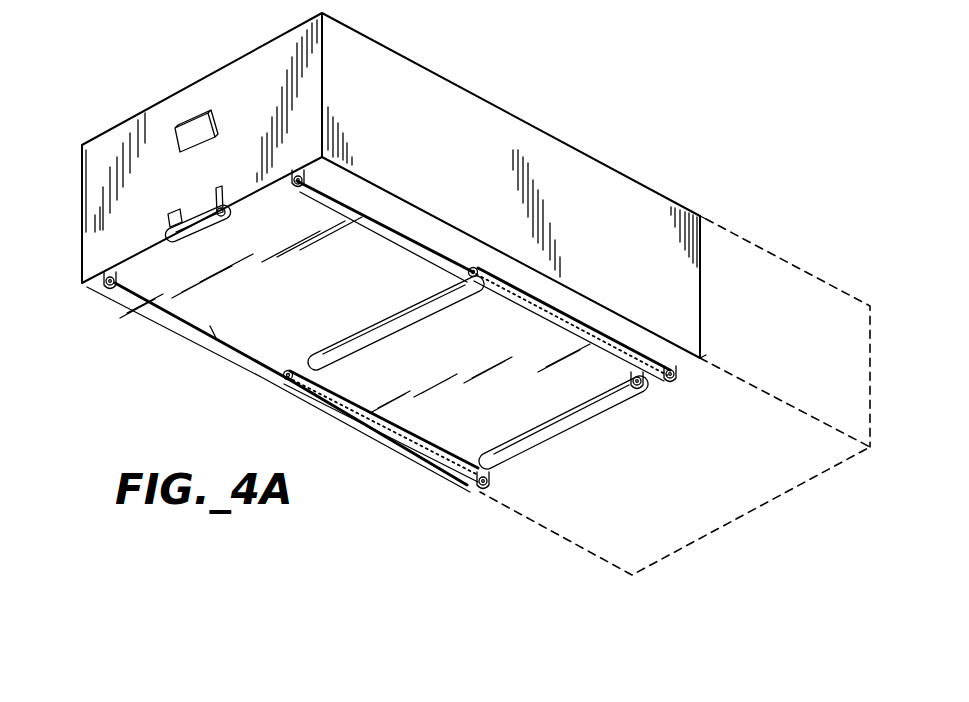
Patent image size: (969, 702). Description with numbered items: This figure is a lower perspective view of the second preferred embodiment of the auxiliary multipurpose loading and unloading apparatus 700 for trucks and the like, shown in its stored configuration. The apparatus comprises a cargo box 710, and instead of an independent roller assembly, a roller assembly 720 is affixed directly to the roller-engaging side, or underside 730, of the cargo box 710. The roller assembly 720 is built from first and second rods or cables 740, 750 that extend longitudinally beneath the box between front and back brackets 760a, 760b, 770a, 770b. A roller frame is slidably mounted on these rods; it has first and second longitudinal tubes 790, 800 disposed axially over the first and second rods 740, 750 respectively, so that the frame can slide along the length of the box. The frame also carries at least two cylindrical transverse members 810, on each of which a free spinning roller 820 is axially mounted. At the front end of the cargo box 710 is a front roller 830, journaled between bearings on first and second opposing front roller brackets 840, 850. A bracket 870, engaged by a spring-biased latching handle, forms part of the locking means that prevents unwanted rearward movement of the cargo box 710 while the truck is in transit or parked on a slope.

The auxiliary multipurpose loading and unloading apparatus 700 is at (660, 120).
The cargo box 710 is at (224, 64).
The roller assembly 720 is at (530, 280).
The underside 730 is at (200, 344).
The first rod 740 is at (365, 210).
The second rod 750 is at (230, 342).
The front bracket 760a is at (301, 188).
The back bracket 760b is at (672, 386).
The front bracket 770a is at (105, 296).
The back bracket 770b is at (494, 489).
The first longitudinal tube 790 is at (558, 322).
The second longitudinal tube 800 is at (404, 452).
The cylindrical transverse member 810 is at (642, 392).
The free spinning roller 820 is at (538, 453).
The front roller 830 is at (205, 210).
The first front roller bracket 840 is at (214, 200).
The second front roller bracket 850 is at (166, 221).
The bracket 870 is at (188, 122).